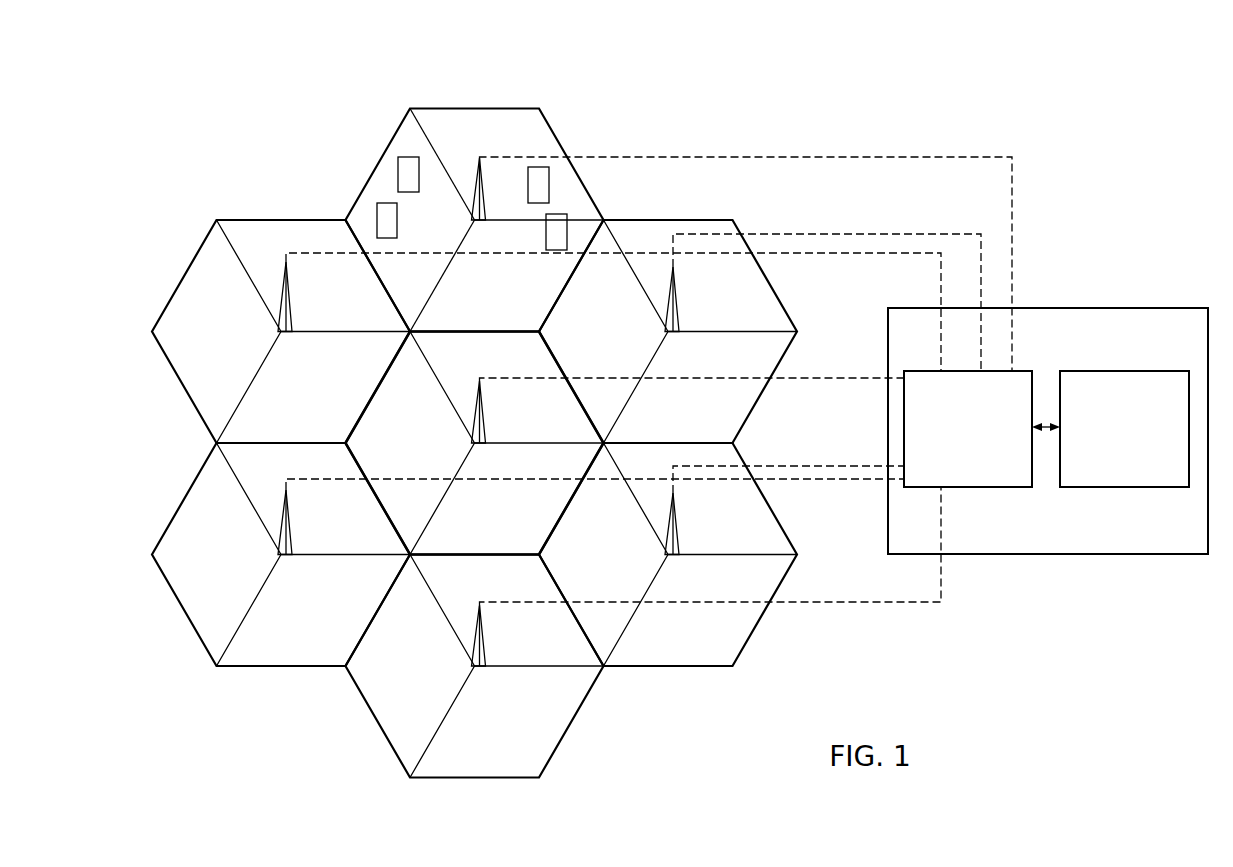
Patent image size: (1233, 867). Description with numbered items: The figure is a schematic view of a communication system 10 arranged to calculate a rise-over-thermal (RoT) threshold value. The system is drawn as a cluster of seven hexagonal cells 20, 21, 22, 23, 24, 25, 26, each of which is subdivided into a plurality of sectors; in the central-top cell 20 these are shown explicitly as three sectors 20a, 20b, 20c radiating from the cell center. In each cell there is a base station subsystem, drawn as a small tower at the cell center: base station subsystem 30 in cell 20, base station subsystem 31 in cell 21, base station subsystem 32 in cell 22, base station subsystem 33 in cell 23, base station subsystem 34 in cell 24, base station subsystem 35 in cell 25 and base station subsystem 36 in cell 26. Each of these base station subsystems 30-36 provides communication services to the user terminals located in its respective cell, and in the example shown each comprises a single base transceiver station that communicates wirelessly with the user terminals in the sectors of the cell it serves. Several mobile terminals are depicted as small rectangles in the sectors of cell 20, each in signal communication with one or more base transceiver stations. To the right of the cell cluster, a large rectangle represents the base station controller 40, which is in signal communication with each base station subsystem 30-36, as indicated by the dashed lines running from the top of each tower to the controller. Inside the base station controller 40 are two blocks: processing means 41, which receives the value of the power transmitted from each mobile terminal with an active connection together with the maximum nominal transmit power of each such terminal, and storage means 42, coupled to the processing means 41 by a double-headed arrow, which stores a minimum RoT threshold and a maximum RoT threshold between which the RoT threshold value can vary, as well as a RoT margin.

The communication system 10 is at (985, 142).
The cell 20 is at (437, 220).
The sector 20a is at (476, 146).
The sector 20b is at (498, 299).
The sector 20c is at (414, 246).
The cell 21 is at (196, 268).
The cell 22 is at (322, 633).
The cell 23 is at (768, 295).
The cell 24 is at (564, 675).
The cell 25 is at (722, 640).
The cell 26 is at (442, 538).
The base station subsystem 30 is at (473, 182).
The base station subsystem 31 is at (280, 273).
The base station subsystem 32 is at (292, 548).
The base station subsystem 33 is at (675, 290).
The base station subsystem 34 is at (485, 622).
The base station subsystem 35 is at (678, 529).
The base station subsystem 36 is at (473, 407).
The base station controller 40 is at (1045, 498).
The processing means 41 is at (942, 446).
The storage means 42 is at (1101, 446).